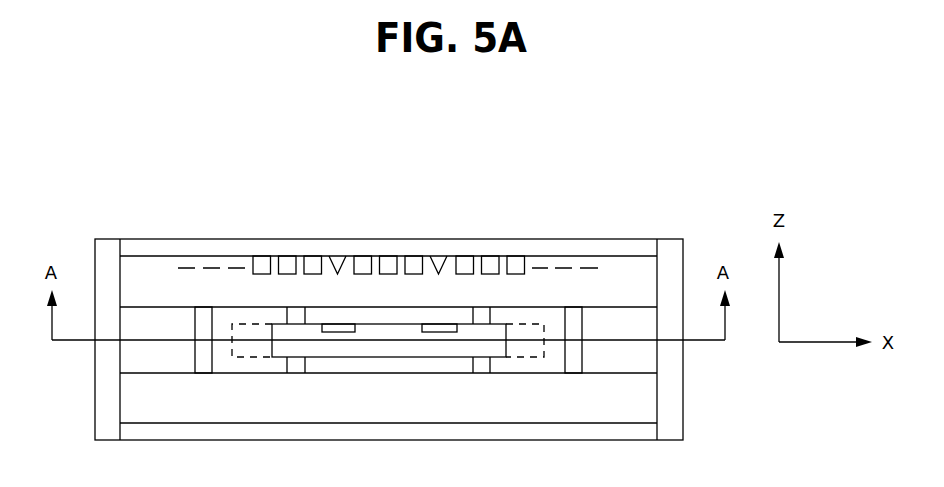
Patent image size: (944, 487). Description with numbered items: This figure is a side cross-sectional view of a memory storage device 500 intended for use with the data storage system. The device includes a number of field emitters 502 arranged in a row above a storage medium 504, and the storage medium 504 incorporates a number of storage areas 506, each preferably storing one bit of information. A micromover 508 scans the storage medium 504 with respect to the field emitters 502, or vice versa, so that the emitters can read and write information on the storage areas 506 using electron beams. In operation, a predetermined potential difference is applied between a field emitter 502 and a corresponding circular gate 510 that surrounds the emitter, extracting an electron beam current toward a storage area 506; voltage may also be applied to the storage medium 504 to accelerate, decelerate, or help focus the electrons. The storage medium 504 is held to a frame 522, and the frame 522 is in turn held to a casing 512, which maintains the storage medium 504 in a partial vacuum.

The memory storage device 500 is at (134, 176).
The field emitter 502 is at (438, 260).
The storage medium 504 is at (242, 357).
The storage area 506 is at (433, 325).
The micromover 508 is at (158, 373).
The circular gate 510 is at (413, 265).
The casing 512 is at (672, 374).
The frame 522 is at (584, 327).